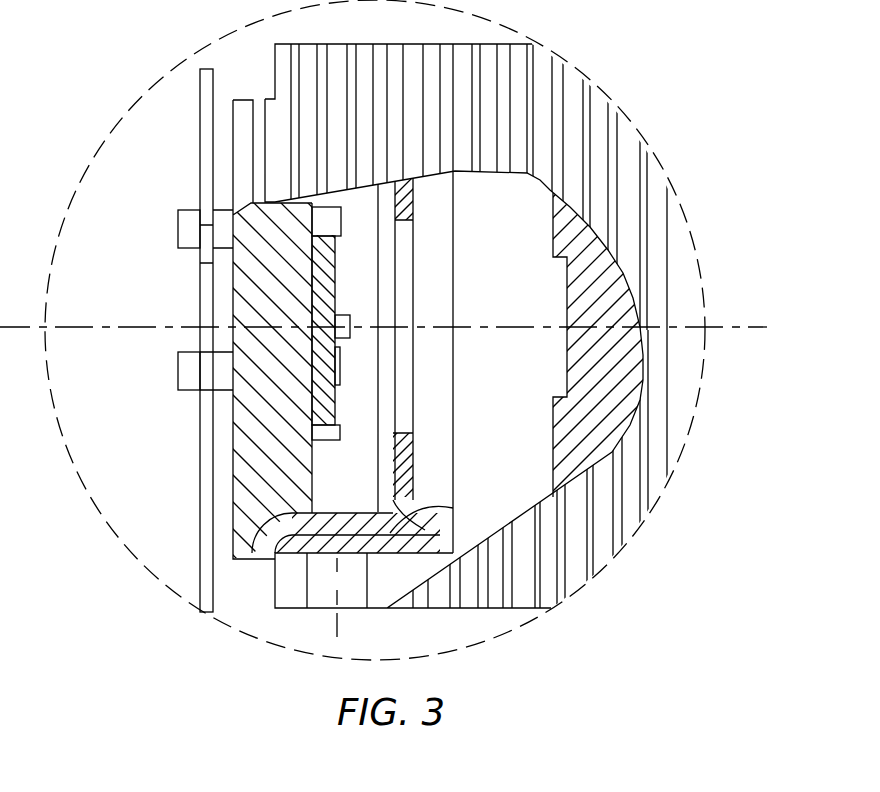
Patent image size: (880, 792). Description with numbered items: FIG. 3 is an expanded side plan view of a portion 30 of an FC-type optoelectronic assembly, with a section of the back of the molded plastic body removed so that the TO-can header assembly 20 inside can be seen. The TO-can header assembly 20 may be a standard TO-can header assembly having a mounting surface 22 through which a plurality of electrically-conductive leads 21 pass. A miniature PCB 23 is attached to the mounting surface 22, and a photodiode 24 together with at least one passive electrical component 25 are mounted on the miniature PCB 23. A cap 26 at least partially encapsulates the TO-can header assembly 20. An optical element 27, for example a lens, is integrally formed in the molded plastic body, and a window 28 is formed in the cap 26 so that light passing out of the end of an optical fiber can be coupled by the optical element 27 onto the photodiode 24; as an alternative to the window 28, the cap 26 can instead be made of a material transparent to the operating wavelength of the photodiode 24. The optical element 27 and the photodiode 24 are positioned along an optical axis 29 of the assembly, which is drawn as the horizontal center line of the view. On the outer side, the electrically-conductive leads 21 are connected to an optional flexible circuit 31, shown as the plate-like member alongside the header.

The TO-can header assembly 20 is at (245, 418).
The electrically-conductive leads 21 is at (178, 228).
The mounting surface 22 is at (318, 467).
The miniature PCB 23 is at (325, 261).
The photodiode 24 is at (343, 317).
The passive electrical component 25 is at (340, 365).
The cap 26 is at (418, 525).
The optical element 27 is at (558, 348).
The window 28 is at (403, 277).
The optical axis 29 is at (718, 327).
The portion 30 is at (594, 50).
The flexible circuit 31 is at (200, 127).